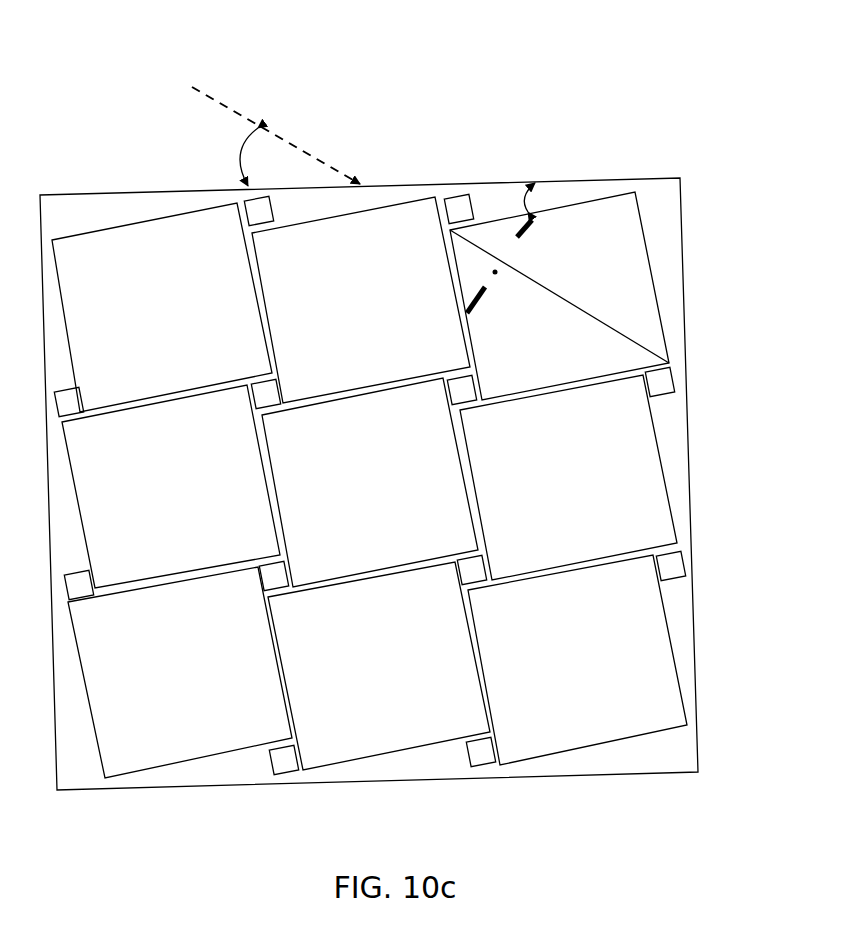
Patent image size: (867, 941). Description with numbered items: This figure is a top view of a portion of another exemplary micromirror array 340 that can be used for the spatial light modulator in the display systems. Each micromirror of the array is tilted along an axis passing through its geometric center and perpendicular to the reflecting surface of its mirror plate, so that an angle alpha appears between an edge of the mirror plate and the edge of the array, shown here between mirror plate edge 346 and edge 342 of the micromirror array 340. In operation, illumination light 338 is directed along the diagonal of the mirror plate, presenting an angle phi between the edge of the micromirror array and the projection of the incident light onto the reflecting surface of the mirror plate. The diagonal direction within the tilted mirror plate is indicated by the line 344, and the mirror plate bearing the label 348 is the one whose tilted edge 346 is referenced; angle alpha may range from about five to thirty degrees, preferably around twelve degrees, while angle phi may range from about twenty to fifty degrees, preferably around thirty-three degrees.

The illumination light 338 is at (267, 128).
The micromirror array 340 is at (416, 100).
The edge of the micromirror array 342 is at (190, 190).
The grating direction line 344 is at (507, 252).
The mirror plate edge 346 is at (602, 200).
The tile region 348 is at (567, 257).